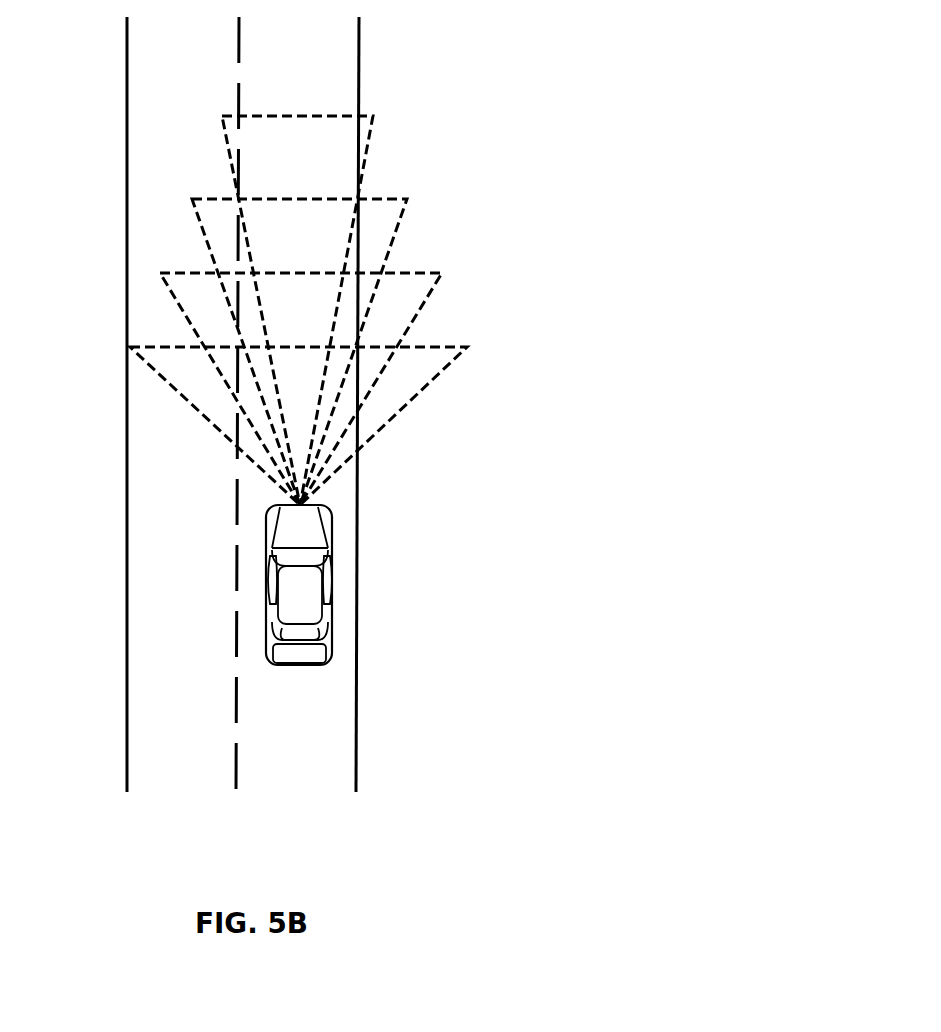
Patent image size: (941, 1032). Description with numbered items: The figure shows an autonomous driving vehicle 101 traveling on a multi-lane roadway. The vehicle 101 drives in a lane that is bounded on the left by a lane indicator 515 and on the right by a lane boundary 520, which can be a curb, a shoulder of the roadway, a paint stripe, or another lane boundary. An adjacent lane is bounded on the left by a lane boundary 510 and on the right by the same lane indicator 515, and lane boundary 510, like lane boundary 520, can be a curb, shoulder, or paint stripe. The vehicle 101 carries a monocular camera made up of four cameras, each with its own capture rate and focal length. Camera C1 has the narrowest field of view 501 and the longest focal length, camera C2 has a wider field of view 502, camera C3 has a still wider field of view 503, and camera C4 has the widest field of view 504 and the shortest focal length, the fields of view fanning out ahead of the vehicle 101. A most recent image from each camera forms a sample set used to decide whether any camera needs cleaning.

The autonomous driving vehicle 101 is at (330, 577).
The field of view 501 is at (373, 117).
The field of view 502 is at (407, 200).
The field of view 503 is at (442, 274).
The field of view 504 is at (467, 348).
The lane boundary 510 is at (126, 419).
The lane indicator 515 is at (236, 419).
The lane boundary 520 is at (356, 419).